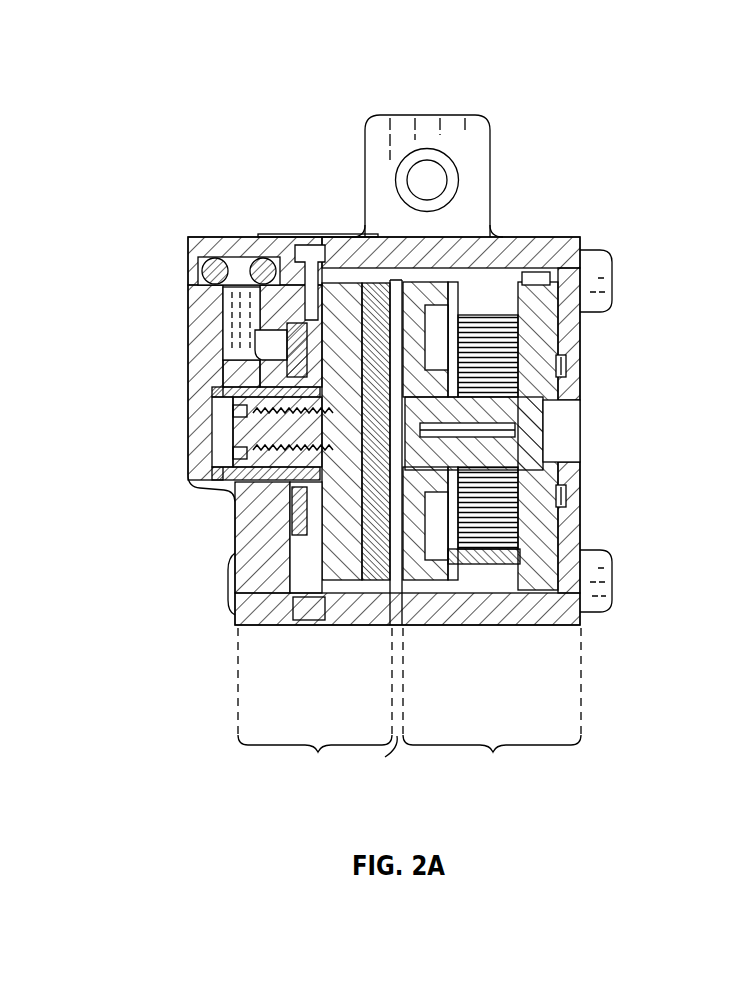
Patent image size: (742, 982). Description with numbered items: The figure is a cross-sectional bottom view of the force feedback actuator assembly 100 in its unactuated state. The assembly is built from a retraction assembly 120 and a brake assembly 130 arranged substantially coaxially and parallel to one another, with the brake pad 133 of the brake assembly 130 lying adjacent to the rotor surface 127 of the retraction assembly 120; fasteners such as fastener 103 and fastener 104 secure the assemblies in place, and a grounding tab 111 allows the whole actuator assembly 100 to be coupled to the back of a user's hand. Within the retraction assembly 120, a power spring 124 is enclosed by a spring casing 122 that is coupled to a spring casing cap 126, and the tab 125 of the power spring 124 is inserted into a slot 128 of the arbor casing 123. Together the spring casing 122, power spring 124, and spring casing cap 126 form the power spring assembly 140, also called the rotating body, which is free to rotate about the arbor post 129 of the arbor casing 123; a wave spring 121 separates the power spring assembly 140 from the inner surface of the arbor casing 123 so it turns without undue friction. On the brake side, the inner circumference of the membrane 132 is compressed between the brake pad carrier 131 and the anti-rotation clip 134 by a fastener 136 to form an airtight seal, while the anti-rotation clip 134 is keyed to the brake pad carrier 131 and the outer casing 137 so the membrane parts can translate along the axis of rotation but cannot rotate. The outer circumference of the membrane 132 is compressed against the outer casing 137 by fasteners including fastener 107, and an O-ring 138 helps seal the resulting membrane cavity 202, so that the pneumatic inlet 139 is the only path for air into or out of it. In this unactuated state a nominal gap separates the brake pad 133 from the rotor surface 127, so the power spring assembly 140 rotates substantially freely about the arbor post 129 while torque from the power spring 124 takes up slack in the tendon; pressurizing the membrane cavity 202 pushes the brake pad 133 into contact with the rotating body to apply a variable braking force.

The force feedback actuator assembly 100 is at (170, 80).
The fastener 103 is at (613, 283).
The fastener 104 is at (612, 583).
The fastener 107 is at (227, 578).
The grounding tab 111 is at (490, 180).
The retraction assembly 120 is at (492, 709).
The wave spring 121 is at (573, 368).
The spring casing 122 is at (543, 587).
The arbor casing 123 is at (583, 495).
The power spring 124 is at (492, 553).
The tab 125 is at (492, 432).
The spring casing cap 126 is at (430, 580).
The rotor surface 127 is at (399, 308).
The slot 128 is at (424, 428).
The arbor post 129 is at (445, 395).
The brake assembly 130 is at (315, 709).
The brake pad carrier 131 is at (352, 595).
The membrane 132 is at (302, 618).
The brake pad 133 is at (378, 300).
The anti-rotation clip 134 is at (200, 503).
The fastener 136 is at (243, 447).
The outer casing 137 is at (187, 408).
The O-ring 138 is at (200, 265).
The pneumatic inlet 139 is at (238, 236).
The power spring assembly 140 is at (606, 625).
The membrane cavity 202 is at (383, 535).